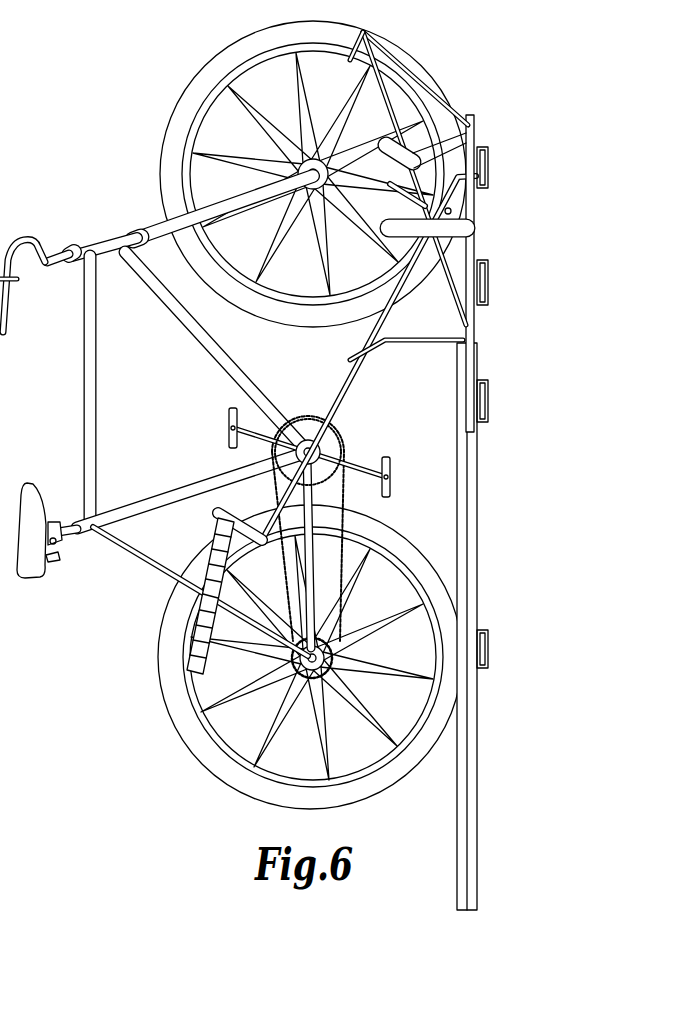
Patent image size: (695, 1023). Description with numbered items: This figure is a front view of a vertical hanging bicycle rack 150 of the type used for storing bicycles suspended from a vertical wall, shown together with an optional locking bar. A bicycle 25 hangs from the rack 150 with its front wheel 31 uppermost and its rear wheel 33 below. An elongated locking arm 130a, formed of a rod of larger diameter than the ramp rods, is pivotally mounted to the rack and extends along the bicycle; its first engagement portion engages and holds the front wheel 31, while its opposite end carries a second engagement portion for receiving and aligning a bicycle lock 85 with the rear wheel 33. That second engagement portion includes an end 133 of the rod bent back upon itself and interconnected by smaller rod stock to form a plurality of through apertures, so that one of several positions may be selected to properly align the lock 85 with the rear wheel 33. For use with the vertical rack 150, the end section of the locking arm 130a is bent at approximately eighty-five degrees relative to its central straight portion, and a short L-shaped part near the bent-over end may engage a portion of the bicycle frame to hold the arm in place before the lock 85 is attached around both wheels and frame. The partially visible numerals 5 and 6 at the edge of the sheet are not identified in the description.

The front wheel 31 is at (205, 70).
The rear wheel 33 is at (190, 748).
The bicycle 25 is at (230, 370).
The bicycle lock 85 is at (223, 513).
The bent-back end of the elongated rod member 133 is at (200, 603).
The vertical hanging bicycle rack 150 is at (460, 440).
The elongated locking arm 130a is at (355, 365).
The partial numeral 5 is at (4, 394).
The partial numeral 6 is at (5, 434).